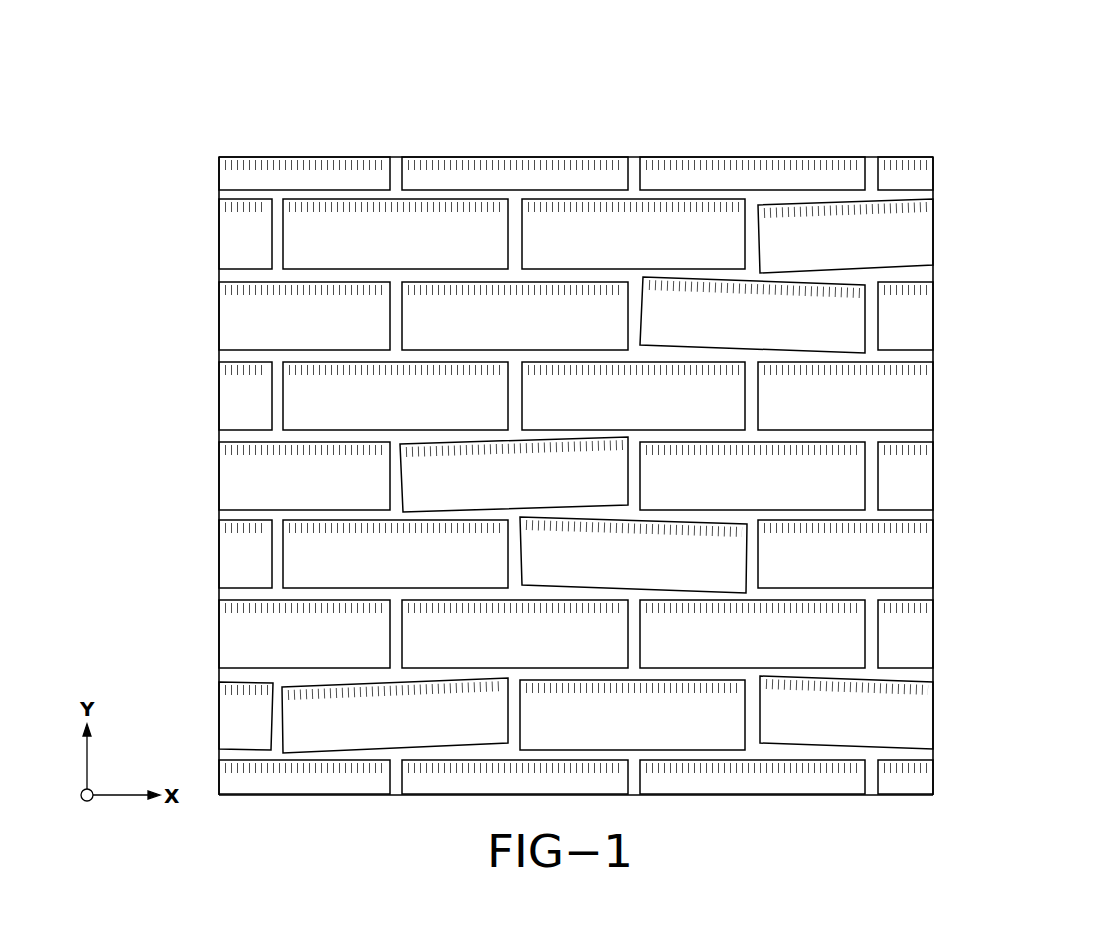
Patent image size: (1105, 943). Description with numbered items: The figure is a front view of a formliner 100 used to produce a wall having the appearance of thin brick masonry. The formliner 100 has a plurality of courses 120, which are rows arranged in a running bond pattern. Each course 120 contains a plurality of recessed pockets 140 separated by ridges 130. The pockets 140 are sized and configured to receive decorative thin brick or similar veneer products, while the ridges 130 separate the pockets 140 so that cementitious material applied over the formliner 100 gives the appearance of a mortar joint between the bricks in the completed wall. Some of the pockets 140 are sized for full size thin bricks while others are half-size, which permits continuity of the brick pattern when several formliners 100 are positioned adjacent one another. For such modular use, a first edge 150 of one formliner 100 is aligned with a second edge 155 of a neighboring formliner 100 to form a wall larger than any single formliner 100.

The formliner 100 is at (984, 102).
The courses 120 is at (907, 642).
The ridges 130 is at (514, 276).
The recessed pockets 140 is at (448, 316).
The first edge 150 is at (933, 478).
The second edge 155 is at (219, 478).